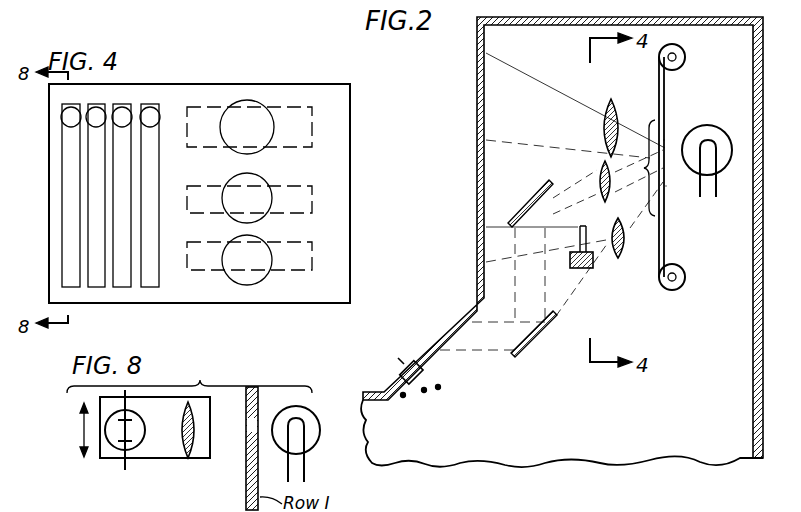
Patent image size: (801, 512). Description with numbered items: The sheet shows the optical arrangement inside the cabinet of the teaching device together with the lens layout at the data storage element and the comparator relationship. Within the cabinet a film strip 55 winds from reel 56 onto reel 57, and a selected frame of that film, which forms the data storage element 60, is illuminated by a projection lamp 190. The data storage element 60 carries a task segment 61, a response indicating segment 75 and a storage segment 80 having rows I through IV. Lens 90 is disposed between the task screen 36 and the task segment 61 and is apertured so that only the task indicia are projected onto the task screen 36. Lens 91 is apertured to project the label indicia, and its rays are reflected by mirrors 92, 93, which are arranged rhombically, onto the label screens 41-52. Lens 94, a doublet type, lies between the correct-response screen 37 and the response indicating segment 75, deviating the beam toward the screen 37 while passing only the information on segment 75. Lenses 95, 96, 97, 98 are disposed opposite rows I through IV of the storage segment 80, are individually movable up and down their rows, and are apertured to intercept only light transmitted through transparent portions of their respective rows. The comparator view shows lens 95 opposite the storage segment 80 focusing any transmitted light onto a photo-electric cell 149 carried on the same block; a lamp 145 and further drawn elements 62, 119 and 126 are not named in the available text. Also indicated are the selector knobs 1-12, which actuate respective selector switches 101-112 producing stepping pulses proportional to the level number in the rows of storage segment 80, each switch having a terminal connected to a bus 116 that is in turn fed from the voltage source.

In FIG. 2, the selector knobs 1-12 is at (400, 362).
In FIG. 2, the task screen 36 is at (477, 106).
In FIG. 2, the correct-response screen 37 is at (477, 248).
In FIG. 2, the label screens 41-52 is at (450, 333).
In FIG. 2, the film strip 55 is at (664, 96).
In FIG. 2, the reel 56 is at (685, 57).
In FIG. 2, the reel 57 is at (685, 278).
In FIG. 4, the data storage element 60 is at (230, 82).
In FIG. 2, the data storage element 60 is at (640, 168).
In FIG. 4, the task segment 61 is at (312, 128).
In FIG. 2, the task segment 61 is at (668, 142).
In FIG. 4, the photocell 62 is at (312, 201).
In FIG. 2, the photocell 62 is at (697, 130).
In FIG. 4, the response indicating segment 75 is at (312, 255).
In FIG. 2, the response indicating segment 75 is at (665, 190).
In FIG. 8, the storage segment 80 is at (264, 406).
In FIG. 4, the lens 90 is at (258, 103).
In FIG. 2, the lens 90 is at (597, 127).
In FIG. 4, the lens 91 is at (262, 180).
In FIG. 2, the lens 91 is at (597, 178).
In FIG. 2, the mirror 92 is at (540, 193).
In FIG. 2, the mirror 93 is at (532, 350).
In FIG. 4, the lens 94 is at (262, 242).
In FIG. 2, the lens 94 is at (619, 258).
In FIG. 4, the lens 95 is at (71, 113).
In FIG. 8, the lens 95 is at (186, 458).
In FIG. 4, the lens 96 is at (97, 113).
In FIG. 4, the lens 97 is at (124, 113).
In FIG. 4, the lens 98 is at (152, 113).
In FIG. 2, the selector switches 101-112 is at (424, 370).
In FIG. 2, the bus 116 is at (403, 395).
In FIG. 2, the contact 119 is at (424, 390).
In FIG. 2, the contact 126 is at (438, 387).
In FIG. 8, the lamp 145 is at (148, 463).
In FIG. 8, the photo-electric cell 149 is at (110, 446).
In FIG. 8, the projection lamp 190 is at (310, 414).
In FIG. 2, the projection lamp 190 is at (732, 138).